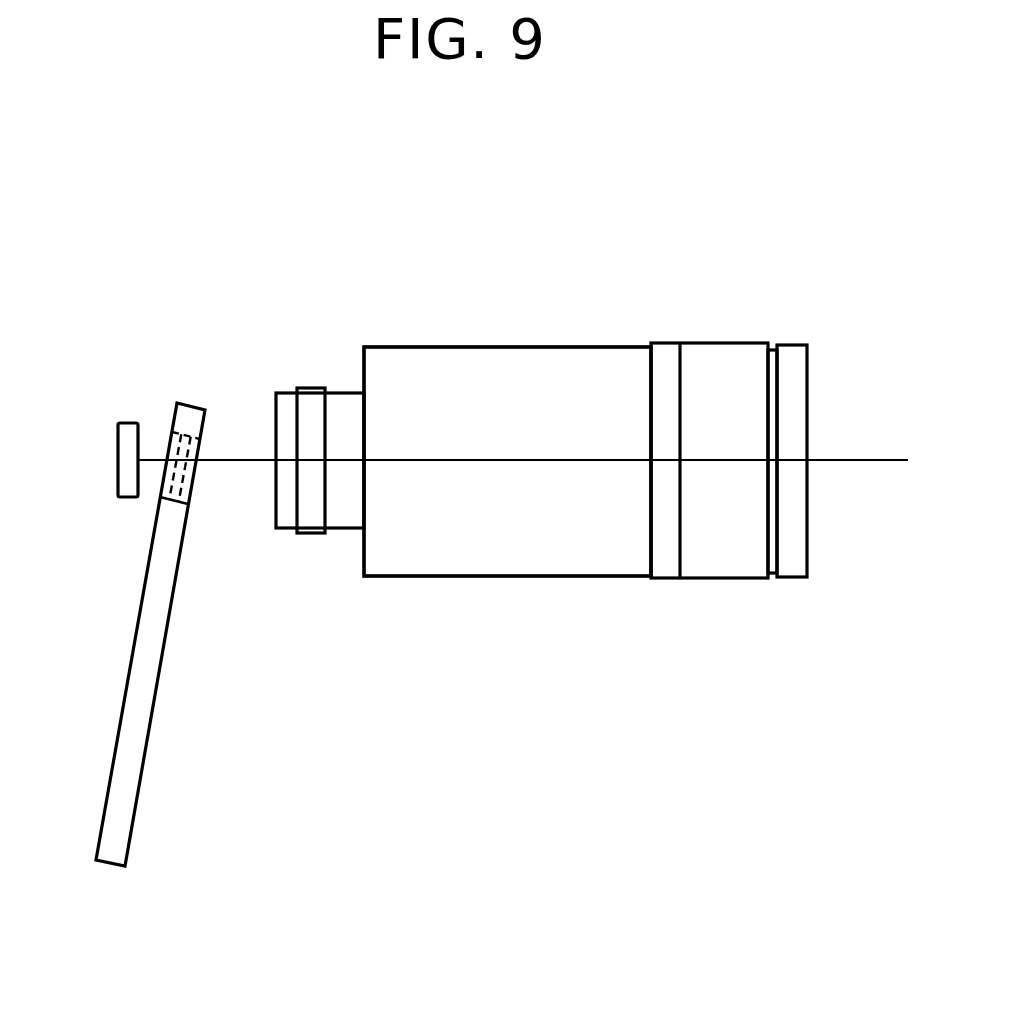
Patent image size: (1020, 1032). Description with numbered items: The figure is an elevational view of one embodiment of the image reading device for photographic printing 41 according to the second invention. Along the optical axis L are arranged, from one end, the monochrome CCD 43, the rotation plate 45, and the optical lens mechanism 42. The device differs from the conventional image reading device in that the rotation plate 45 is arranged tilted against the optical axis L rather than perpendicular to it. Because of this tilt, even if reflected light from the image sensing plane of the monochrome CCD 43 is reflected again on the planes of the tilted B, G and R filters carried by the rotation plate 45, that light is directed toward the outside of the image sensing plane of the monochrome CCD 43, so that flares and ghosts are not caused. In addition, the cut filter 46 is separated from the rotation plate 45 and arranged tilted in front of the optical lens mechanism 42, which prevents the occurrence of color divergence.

The image reading device for photographic printing 41 is at (418, 318).
The optical lens mechanism 42 is at (558, 373).
The monochrome CCD 43 is at (123, 455).
The rotation plate 45 is at (187, 414).
The cut filter 46 is at (190, 492).
The optical axis L is at (847, 460).